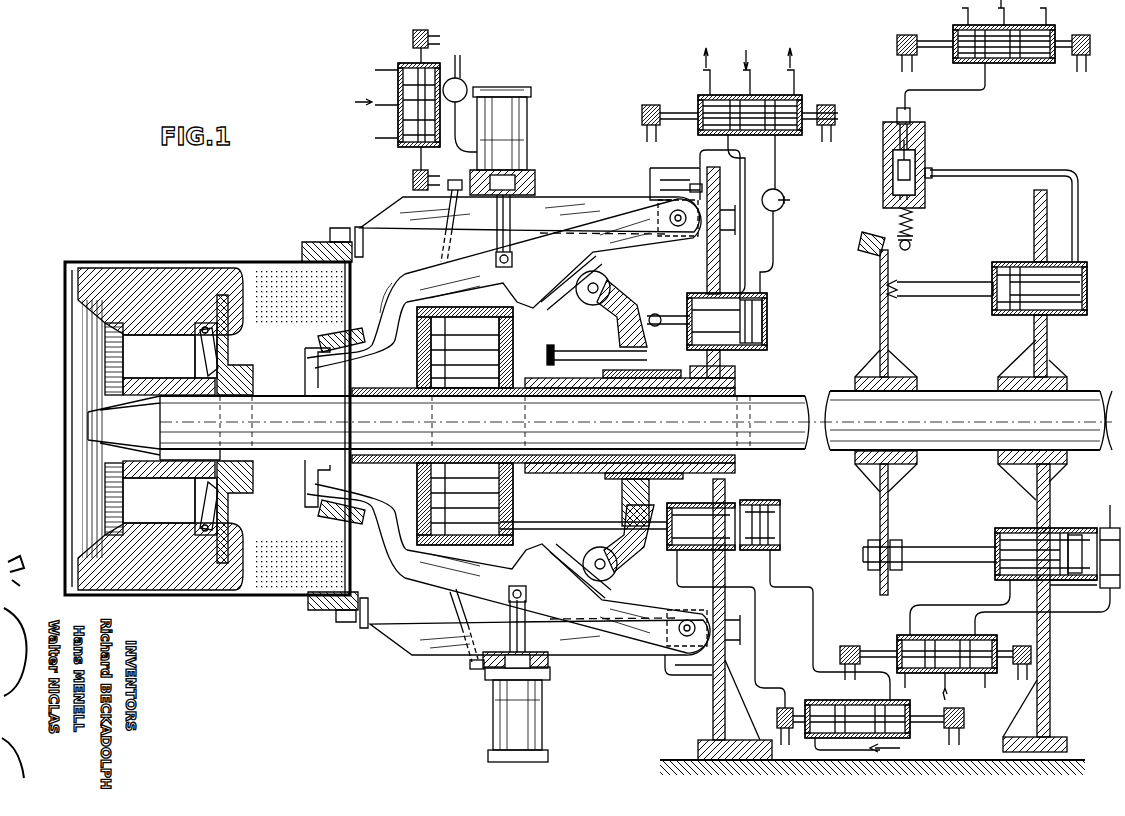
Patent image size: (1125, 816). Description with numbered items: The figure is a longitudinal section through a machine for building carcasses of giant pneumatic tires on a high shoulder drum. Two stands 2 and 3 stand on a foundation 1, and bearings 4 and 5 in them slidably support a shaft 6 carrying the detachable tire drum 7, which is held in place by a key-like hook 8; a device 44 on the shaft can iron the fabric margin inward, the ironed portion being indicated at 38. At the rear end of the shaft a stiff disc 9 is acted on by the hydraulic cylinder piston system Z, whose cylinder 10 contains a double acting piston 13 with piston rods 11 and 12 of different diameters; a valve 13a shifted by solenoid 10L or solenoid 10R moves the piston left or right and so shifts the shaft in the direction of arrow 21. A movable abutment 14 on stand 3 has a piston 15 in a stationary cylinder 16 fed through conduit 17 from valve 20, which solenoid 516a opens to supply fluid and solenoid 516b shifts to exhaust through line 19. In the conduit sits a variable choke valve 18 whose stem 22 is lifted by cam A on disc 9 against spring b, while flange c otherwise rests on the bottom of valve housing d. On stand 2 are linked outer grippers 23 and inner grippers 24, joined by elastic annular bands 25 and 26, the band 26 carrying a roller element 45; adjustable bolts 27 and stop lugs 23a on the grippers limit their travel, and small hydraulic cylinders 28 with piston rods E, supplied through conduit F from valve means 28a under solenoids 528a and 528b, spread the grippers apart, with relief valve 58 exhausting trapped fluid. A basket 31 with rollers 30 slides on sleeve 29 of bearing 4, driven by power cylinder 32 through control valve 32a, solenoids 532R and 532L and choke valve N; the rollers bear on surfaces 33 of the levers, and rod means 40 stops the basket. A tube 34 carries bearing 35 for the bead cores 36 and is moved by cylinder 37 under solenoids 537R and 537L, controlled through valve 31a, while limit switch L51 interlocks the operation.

The foundation 1 is at (666, 762).
The stand 2 is at (722, 660).
The stand 3 is at (1050, 668).
The bearing 4 is at (730, 384).
The bearing 5 is at (1047, 377).
The shaft 6 is at (818, 394).
The tire drum 7 is at (186, 270).
The key-like hook 8 is at (118, 398).
The stiff disc 9 is at (880, 322).
The cylinder 10 is at (1012, 528).
The solenoid 10R is at (842, 632).
The solenoid 10L is at (1024, 670).
The piston rod 11 is at (1111, 539).
The piston rod 12 is at (944, 562).
The double acting piston 13 is at (1076, 535).
The valve 13a is at (904, 640).
The movable abutment 14 is at (948, 286).
The piston 15 is at (1030, 262).
The cylinder 16 is at (1018, 315).
The conduit 17 is at (1015, 170).
The variable choke valve 18 is at (920, 125).
The pipe 19 is at (952, 90).
The valve 20 is at (1000, 66).
The arrow 21 is at (960, 535).
The stem 22 is at (922, 196).
The outer grippers 23 is at (411, 210).
The stop lugs 23a is at (650, 184).
The inner grippers 24 is at (414, 278).
The elastic annular band 25 is at (322, 242).
The elastic annular band 26 is at (339, 345).
The adjustable bolts 27 is at (438, 252).
The hydraulic cylinders 28 is at (524, 110).
The valve means 28a is at (398, 100).
The sleeve 29 is at (583, 468).
The rollers 30 is at (605, 278).
The basket 31 is at (622, 512).
The control valve 31a is at (826, 754).
The power cylinder 32 is at (768, 308).
The control valve 32a is at (790, 135).
The surfaces 33 is at (566, 301).
The tube 34 is at (486, 466).
The bearing 35 is at (506, 525).
The bead cores 36 is at (394, 308).
The cylinder 37 is at (756, 503).
The drum wall 38 is at (270, 262).
The rod means 40 is at (594, 354).
The device 44 is at (215, 530).
The annular spring or roller element 45 is at (306, 492).
The relief valve 58 is at (464, 86).
The solenoid 516a is at (896, 40).
The solenoid 516b is at (1088, 38).
The solenoid 528a is at (412, 182).
The solenoid 528b is at (413, 33).
The solenoid 532R is at (650, 104).
The solenoid 532L is at (826, 104).
The solenoid 537R is at (785, 700).
The solenoid 537L is at (964, 716).
The cam A is at (870, 234).
The piston rod E is at (510, 212).
The conduit F is at (460, 148).
The limit switch L51 is at (690, 185).
The choke valve N is at (783, 212).
The hydraulic cylinder piston system Z is at (1078, 501).
The spring b is at (921, 228).
The flange c is at (884, 187).
The valve housing d is at (883, 152).